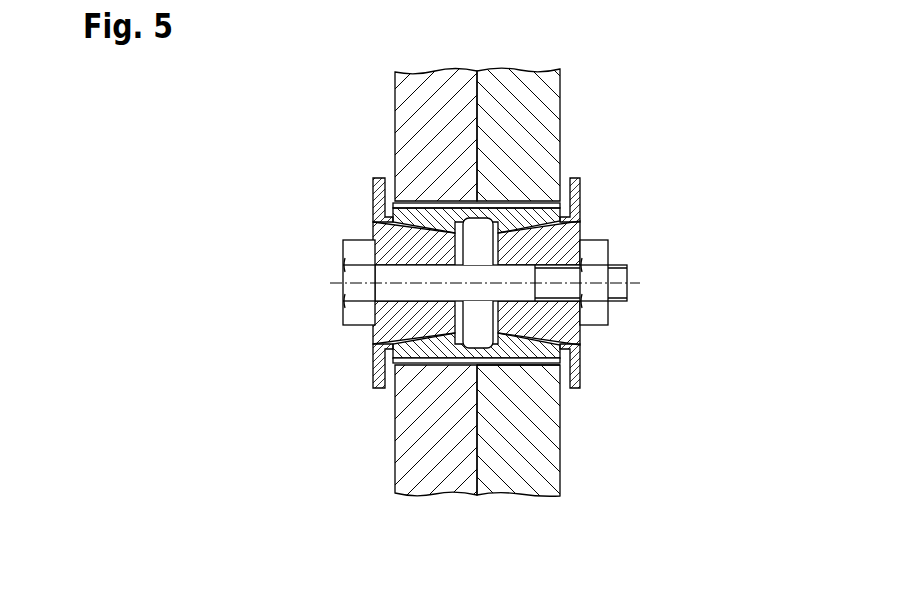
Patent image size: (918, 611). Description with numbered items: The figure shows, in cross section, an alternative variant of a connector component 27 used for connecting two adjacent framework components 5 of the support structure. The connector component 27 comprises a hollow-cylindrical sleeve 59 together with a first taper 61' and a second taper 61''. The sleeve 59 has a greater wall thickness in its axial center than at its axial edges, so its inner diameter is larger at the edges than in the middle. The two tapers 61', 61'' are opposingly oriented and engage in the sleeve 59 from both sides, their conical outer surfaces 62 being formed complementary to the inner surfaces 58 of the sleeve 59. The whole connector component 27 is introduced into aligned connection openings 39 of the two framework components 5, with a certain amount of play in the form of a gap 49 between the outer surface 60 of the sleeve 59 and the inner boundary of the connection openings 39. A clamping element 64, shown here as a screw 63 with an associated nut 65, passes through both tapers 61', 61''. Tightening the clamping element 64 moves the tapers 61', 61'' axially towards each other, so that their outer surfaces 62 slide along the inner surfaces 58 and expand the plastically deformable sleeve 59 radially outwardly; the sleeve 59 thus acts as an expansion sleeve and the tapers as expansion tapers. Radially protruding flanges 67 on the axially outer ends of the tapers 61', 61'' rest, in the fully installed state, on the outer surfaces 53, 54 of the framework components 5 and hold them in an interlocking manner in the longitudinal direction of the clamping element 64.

The framework component 5 is at (418, 102).
The connector component 27 is at (616, 340).
The connection opening 39 is at (563, 346).
The gap 49 is at (507, 363).
The outer surface of framework component 53 is at (395, 463).
The outer surface of framework component 54 is at (561, 470).
The inner surface of sleeve 58 is at (424, 366).
The sleeve 59 is at (520, 214).
The outer surface of sleeve 60 is at (418, 199).
The first taper 61' is at (352, 236).
The second taper 61'' is at (575, 223).
The conical outer surface 62 is at (389, 329).
The screw 63 is at (618, 275).
The clamping element 64 is at (330, 308).
The nut 65 is at (600, 312).
The flange 67 is at (580, 378).